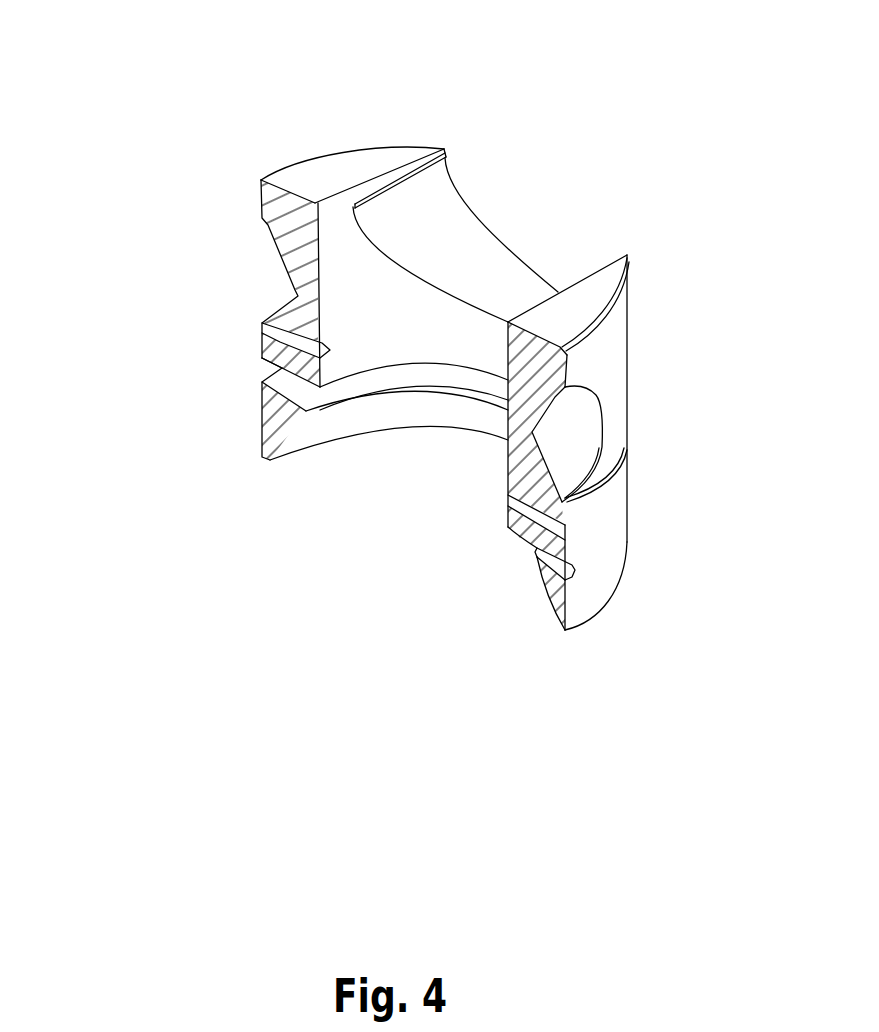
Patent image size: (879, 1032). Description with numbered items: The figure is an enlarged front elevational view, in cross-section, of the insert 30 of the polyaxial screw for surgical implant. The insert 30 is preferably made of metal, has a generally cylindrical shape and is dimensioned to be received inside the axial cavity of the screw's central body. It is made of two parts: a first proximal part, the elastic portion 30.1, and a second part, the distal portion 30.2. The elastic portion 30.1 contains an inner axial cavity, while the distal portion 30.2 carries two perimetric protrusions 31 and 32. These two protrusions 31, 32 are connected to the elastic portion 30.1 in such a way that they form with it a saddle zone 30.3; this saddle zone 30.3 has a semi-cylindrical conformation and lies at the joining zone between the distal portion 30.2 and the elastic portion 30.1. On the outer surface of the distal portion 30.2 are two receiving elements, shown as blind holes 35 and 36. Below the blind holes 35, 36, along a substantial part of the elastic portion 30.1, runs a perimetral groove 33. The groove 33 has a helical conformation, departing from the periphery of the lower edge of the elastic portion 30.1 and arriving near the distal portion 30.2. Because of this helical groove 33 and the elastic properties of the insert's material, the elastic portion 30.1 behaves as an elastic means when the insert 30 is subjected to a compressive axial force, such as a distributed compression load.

The insert 30 is at (258, 93).
The elastic portion 30.1 is at (172, 446).
The distal portion 30.2 is at (206, 215).
The saddle zone 30.3 is at (442, 216).
The perimetric protrusion 31 is at (575, 305).
The perimetric protrusion 32 is at (341, 165).
The perimetral groove 33 is at (300, 392).
The blind hole 35 is at (573, 440).
The blind hole 36 is at (283, 286).